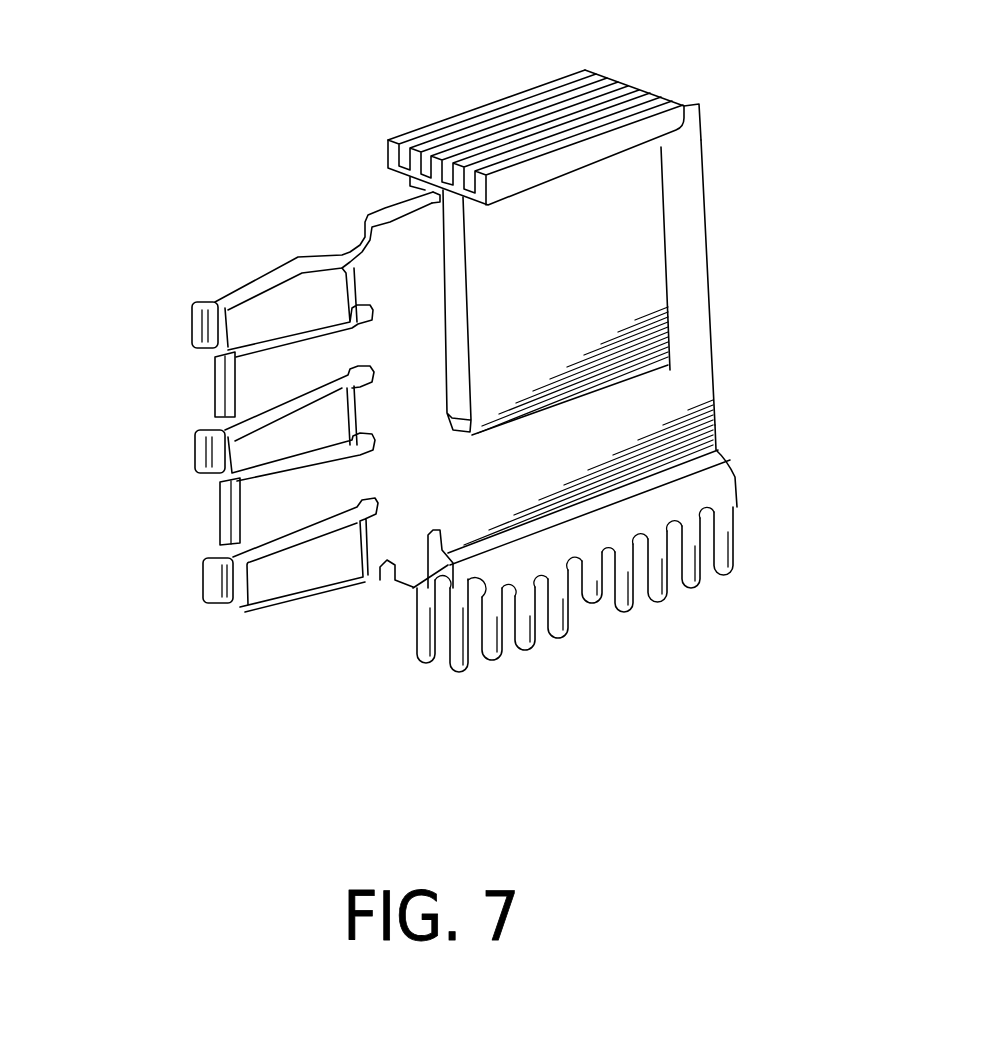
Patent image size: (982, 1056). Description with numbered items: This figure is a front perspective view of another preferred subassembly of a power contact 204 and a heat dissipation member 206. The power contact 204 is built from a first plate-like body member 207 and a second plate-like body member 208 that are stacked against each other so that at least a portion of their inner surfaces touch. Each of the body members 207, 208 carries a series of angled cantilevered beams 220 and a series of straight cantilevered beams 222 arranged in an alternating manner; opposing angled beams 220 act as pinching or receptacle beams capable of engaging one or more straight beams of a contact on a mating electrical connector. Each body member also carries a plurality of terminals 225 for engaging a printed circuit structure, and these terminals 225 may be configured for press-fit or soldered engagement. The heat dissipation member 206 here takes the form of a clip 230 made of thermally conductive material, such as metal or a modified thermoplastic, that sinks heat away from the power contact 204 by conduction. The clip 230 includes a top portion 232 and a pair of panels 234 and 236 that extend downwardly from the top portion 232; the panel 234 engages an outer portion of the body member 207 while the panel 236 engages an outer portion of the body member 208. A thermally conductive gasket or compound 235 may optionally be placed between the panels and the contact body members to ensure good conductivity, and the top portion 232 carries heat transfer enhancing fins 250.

The power contact 204 is at (620, 364).
The heat dissipation member 206 is at (527, 104).
The clip 230 is at (452, 97).
The first plate-like body member 207 is at (710, 386).
The second plate-like body member 208 is at (232, 397).
The angled cantilevered beams 220 is at (193, 331).
The straight cantilevered beams 222 is at (247, 522).
The terminals 225 is at (628, 608).
The top portion 232 is at (410, 180).
The panel 234 is at (643, 230).
The thermally conductive gasket or compound 235 is at (440, 328).
The panel 236 is at (410, 190).
The fins 250 is at (686, 104).